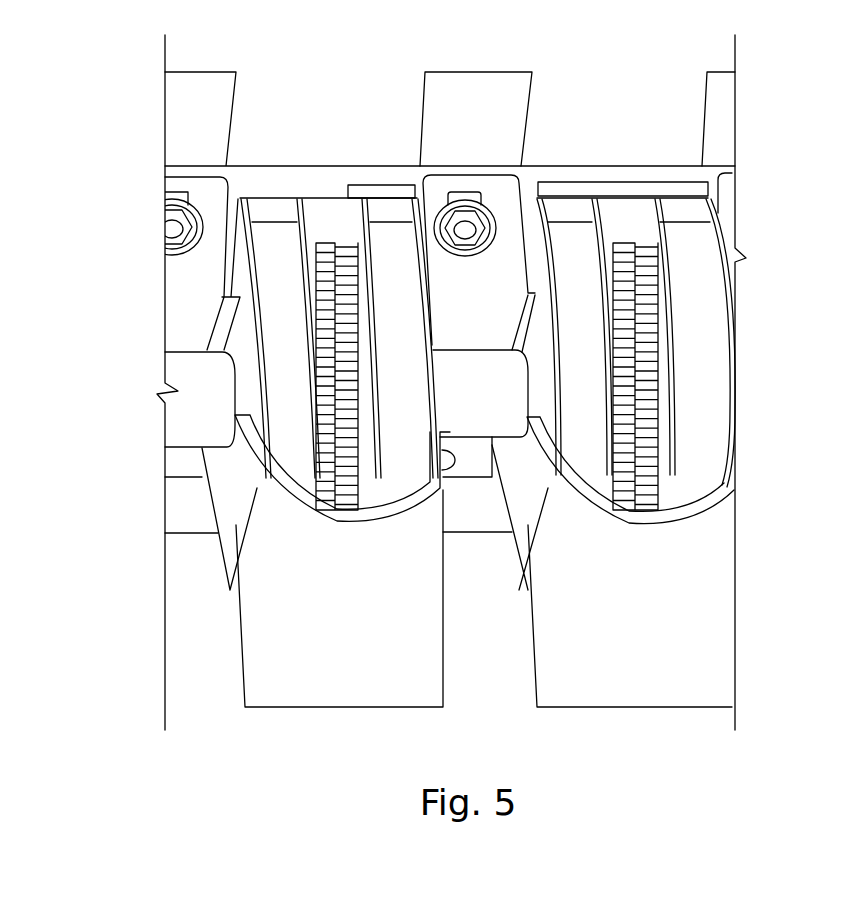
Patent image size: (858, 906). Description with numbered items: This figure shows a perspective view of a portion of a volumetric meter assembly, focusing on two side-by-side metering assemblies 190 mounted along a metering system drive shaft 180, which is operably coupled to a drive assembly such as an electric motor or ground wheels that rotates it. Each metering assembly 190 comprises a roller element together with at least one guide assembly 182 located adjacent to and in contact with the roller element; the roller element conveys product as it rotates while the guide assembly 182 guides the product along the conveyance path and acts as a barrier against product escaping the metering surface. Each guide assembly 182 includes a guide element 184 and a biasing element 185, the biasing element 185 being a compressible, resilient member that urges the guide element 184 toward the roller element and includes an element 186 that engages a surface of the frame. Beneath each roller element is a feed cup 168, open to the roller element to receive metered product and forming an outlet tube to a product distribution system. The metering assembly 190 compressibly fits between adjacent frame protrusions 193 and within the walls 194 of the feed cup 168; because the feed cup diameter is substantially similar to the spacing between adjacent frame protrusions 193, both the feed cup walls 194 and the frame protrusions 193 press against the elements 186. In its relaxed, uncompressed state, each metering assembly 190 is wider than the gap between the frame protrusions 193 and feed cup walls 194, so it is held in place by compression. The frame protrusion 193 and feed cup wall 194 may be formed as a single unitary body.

The feed cup 168 is at (484, 598).
The metering system drive shaft 180 is at (157, 427).
The guide assembly 182 is at (385, 185).
The guide element 184 is at (675, 475).
The biasing element 185 is at (390, 277).
The frame-engaging element 186 is at (563, 400).
The metering assembly 190 is at (635, 182).
The frame protrusion 193 is at (233, 250).
The feed cup wall 194 is at (233, 530).